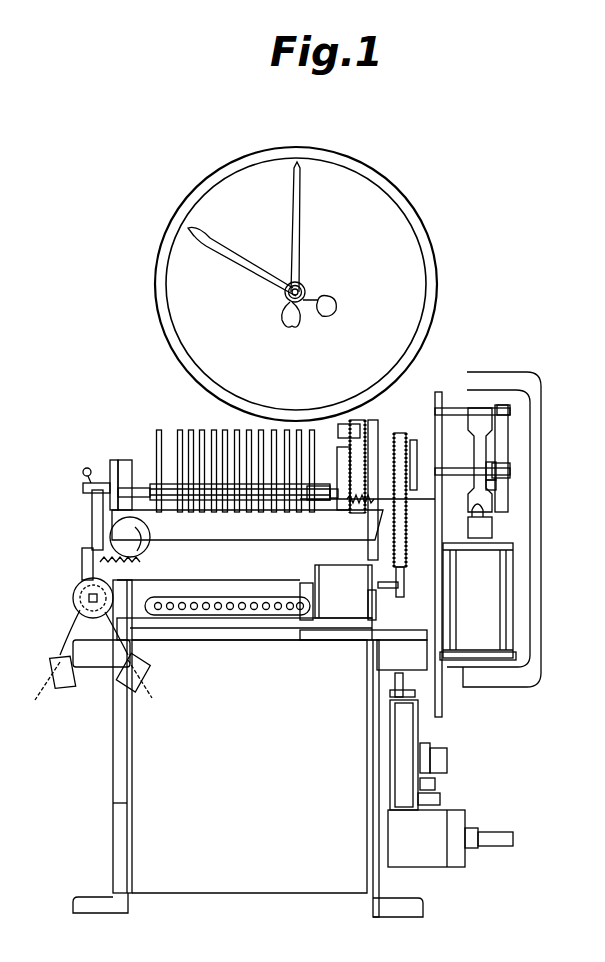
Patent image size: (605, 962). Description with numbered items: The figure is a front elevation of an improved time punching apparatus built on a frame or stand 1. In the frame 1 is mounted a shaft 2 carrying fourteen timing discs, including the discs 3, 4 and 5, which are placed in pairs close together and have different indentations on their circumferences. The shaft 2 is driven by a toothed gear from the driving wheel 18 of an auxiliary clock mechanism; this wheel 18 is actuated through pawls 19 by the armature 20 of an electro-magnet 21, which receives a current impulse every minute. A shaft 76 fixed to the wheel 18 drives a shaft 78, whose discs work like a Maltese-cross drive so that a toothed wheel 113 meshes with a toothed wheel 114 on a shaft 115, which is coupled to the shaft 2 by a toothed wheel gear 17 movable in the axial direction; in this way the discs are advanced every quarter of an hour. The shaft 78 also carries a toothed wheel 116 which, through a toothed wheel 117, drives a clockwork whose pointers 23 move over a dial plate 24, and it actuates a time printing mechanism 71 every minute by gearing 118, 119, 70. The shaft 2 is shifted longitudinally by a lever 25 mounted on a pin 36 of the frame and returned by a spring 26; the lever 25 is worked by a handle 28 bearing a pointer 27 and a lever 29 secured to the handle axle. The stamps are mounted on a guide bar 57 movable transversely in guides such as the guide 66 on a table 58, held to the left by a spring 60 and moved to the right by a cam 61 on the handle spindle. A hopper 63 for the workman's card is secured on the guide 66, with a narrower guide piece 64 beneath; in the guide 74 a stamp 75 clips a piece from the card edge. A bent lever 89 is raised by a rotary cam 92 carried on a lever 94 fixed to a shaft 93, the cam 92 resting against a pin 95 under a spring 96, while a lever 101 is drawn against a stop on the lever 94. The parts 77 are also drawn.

The frame 1 is at (113, 740).
The shaft 2 is at (170, 490).
The disc 3 is at (157, 445).
The disc 4 is at (188, 432).
The disc 5 is at (202, 440).
The toothed wheel gear 17 is at (337, 475).
The driving wheel 18 is at (508, 497).
The pawls 19 is at (492, 450).
The armature 20 is at (492, 516).
The electro-magnet 21 is at (480, 598).
The pointers 23 is at (290, 245).
The dial plate 24 is at (296, 284).
The lever 25 is at (92, 512).
The spring 26 is at (345, 505).
The pointer 27 is at (70, 632).
The handle 28 is at (142, 545).
The lever 29 is at (82, 558).
The pin 36 is at (90, 470).
The guide bar 57 is at (208, 596).
The table 58 is at (268, 636).
The spring 60 is at (128, 568).
The cam 61 is at (75, 605).
The hopper 63 is at (158, 414).
The guide piece 64 is at (249, 766).
The guide 66 is at (218, 630).
The gearing 70 is at (400, 585).
The time printing mechanism 71 is at (334, 580).
The guide 74 is at (368, 604).
The stamp 75 is at (366, 622).
The shaft 76 is at (472, 459).
The collar 77 is at (486, 470).
The shaft 78 is at (486, 486).
The bent lever 89 is at (440, 758).
The rotary cam 92 is at (420, 784).
The shaft 93 is at (495, 838).
The lever 94 is at (404, 740).
The pin 95 is at (426, 838).
The spring 96 is at (418, 798).
The lever 101 is at (395, 682).
The toothed wheel 113 is at (350, 424).
The toothed wheel 114 is at (350, 448).
The shaft 115 is at (380, 430).
The toothed wheel 116 is at (396, 548).
The toothed wheel 117 is at (410, 410).
The gearing 118 is at (400, 500).
The gearing 119 is at (402, 530).